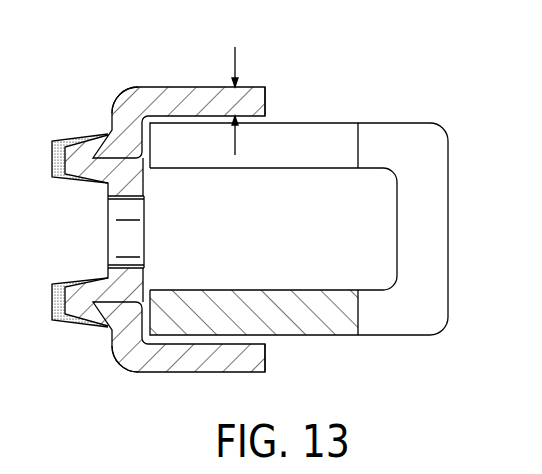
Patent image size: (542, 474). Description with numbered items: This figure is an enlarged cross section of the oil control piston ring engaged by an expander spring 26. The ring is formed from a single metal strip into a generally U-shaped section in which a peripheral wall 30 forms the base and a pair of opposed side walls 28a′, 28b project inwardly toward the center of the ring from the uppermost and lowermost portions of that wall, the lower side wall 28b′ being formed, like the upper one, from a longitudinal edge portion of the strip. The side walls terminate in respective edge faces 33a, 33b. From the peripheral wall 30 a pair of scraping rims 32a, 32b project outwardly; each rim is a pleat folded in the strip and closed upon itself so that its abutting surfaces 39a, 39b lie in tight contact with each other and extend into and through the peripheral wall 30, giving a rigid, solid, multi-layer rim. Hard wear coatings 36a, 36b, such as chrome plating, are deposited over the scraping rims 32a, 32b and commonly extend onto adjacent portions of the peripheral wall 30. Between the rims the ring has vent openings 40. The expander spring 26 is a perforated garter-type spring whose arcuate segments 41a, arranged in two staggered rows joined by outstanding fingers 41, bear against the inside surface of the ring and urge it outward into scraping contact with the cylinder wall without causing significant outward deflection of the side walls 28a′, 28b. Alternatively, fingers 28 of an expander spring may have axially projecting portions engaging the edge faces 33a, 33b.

The expander spring 26 is at (458, 176).
The fingers 28 is at (152, 90).
The side wall 28a′ is at (198, 87).
The side wall 28b is at (233, 360).
The side wall 28b′ is at (215, 373).
The peripheral wall 30 is at (113, 357).
The scraping rim 32a is at (82, 160).
The scraping rim 32b is at (77, 300).
The edge face 33a is at (266, 94).
The edge face 33b is at (266, 352).
The hard wear coating 36a is at (53, 145).
The hard wear coating 36b is at (53, 318).
The abutting surfaces 39a is at (110, 133).
The abutting surfaces 39b is at (110, 327).
The vent openings 40 is at (135, 243).
The finger 41 is at (438, 264).
The arcuate segments 41a is at (283, 152).